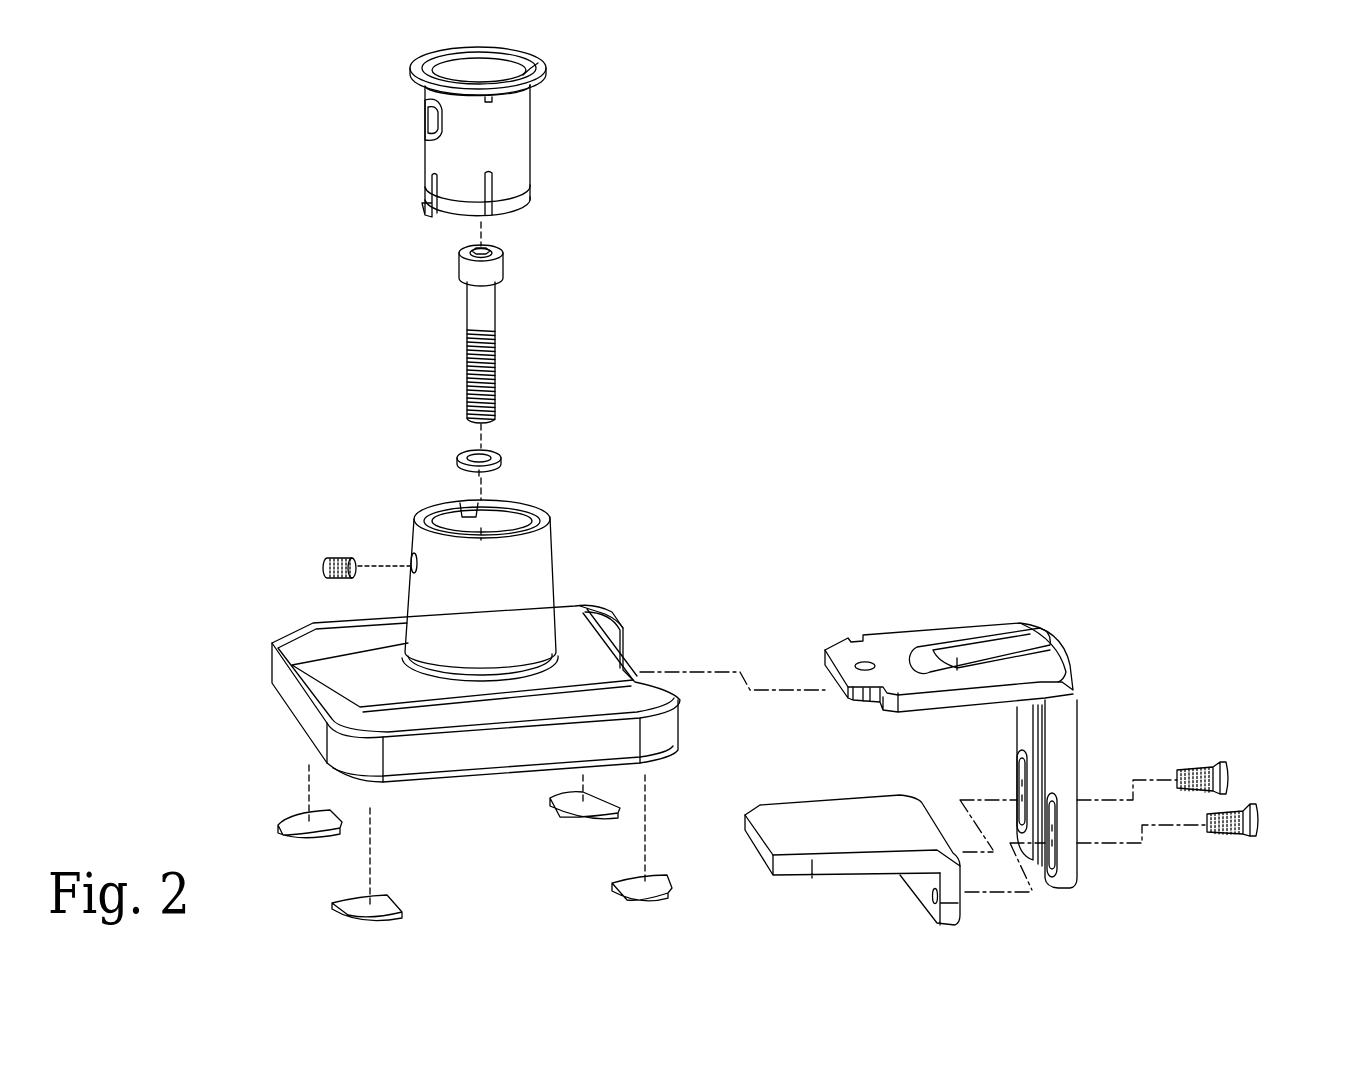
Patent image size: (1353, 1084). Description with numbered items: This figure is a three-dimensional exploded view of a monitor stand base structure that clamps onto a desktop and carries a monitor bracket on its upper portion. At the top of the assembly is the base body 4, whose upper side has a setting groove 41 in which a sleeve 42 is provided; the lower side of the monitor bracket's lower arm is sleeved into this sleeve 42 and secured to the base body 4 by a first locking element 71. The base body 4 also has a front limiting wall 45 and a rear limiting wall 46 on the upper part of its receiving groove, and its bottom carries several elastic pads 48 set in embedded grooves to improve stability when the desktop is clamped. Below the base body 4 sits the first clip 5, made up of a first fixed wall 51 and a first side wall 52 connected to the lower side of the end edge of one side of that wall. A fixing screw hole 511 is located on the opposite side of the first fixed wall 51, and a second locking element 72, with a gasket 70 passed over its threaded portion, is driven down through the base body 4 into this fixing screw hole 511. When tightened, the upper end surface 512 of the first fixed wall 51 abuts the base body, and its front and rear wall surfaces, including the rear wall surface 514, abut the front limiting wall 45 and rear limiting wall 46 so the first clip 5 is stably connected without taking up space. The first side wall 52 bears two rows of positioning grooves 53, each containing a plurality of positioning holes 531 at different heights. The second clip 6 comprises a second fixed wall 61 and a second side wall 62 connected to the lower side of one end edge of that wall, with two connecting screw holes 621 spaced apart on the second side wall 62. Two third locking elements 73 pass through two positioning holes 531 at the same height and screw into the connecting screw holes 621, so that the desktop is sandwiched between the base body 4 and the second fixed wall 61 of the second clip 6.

The base body 4 is at (477, 646).
The setting groove 41 is at (513, 520).
The sleeve 42 is at (533, 117).
The front limiting wall 45 is at (610, 628).
The rear limiting wall 46 is at (634, 676).
The elastic pads 48 is at (650, 903).
The first clip 5 is at (1015, 724).
The first fixed wall 51 is at (945, 627).
The fixing screw hole 511 is at (867, 661).
The upper end surface 512 is at (993, 641).
The rear wall surface 514 is at (1040, 694).
The first side wall 52 is at (1078, 721).
The positioning grooves 53 is at (1053, 793).
The positioning holes 531 is at (1058, 845).
The second clip 6 is at (909, 836).
The second fixed wall 61 is at (808, 797).
The second side wall 62 is at (900, 876).
The connecting screw holes 621 is at (932, 902).
The gasket 70 is at (503, 462).
The first locking element 71 is at (340, 558).
The second locking element 72 is at (505, 270).
The third locking elements 73 is at (1230, 778).